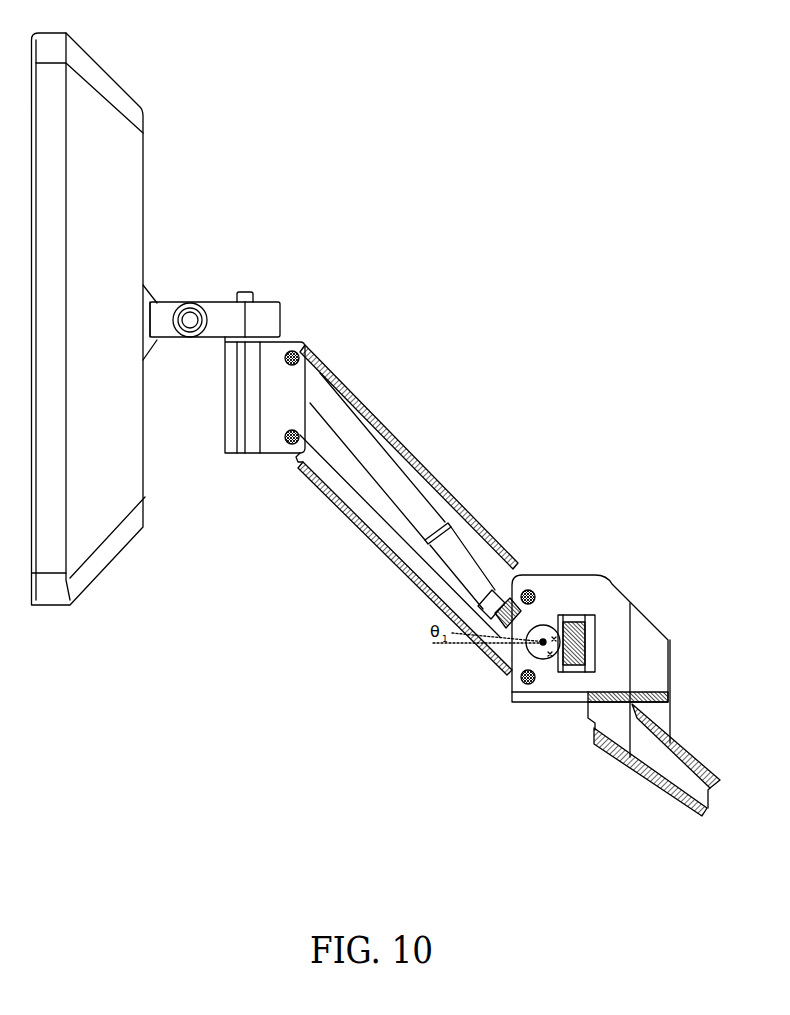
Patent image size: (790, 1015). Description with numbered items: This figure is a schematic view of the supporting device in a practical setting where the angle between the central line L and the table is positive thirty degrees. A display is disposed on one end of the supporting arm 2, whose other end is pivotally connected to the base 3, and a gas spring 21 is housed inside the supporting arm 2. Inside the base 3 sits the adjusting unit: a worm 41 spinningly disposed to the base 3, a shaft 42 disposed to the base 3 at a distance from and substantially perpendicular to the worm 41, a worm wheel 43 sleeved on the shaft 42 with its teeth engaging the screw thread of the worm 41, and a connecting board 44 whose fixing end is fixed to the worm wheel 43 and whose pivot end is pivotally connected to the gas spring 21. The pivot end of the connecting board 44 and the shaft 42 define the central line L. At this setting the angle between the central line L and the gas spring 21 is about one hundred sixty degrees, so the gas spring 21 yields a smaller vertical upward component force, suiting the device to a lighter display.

The supporting arm 2 is at (423, 466).
The gas spring 21 is at (405, 390).
The base 3 is at (565, 597).
The worm 41 is at (593, 632).
The shaft 42 is at (527, 684).
The worm wheel 43 is at (554, 659).
The connecting board 44 is at (527, 637).
The central line L is at (505, 590).